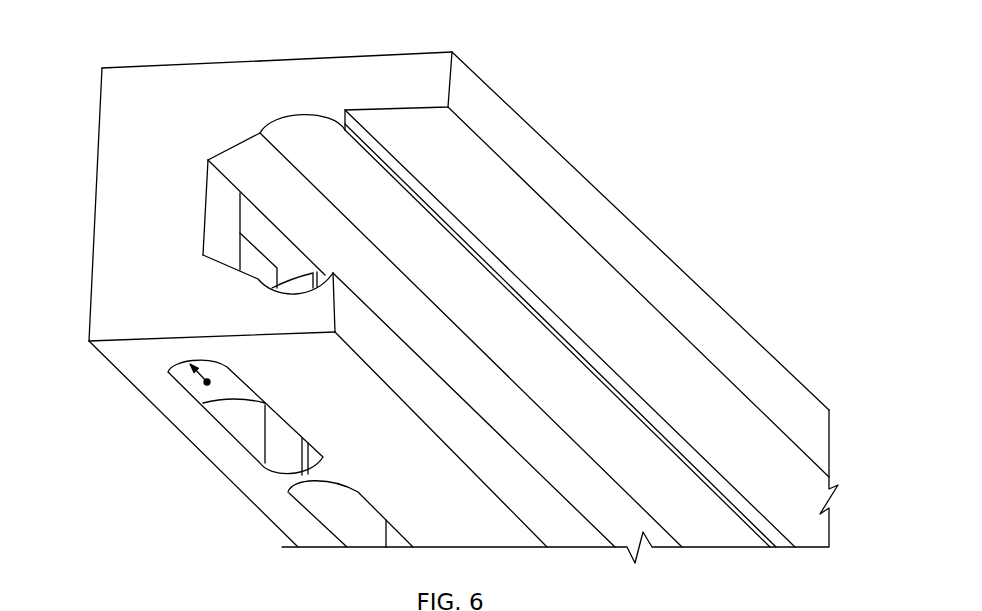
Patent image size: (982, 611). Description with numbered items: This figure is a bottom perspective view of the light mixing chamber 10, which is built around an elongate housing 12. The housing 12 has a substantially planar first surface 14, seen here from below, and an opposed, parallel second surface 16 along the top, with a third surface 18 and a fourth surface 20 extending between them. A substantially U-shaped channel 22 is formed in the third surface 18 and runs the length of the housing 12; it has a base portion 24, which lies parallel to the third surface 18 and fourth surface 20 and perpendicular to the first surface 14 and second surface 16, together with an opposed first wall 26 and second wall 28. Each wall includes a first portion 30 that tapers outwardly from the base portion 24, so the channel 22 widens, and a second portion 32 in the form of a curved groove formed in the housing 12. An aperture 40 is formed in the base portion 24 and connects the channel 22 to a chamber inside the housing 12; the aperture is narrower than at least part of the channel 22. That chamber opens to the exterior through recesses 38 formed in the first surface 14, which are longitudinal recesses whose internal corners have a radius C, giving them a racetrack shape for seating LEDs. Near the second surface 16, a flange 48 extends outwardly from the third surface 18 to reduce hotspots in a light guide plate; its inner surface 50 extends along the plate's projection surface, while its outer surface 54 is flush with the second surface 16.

The light mixing chamber 10 is at (634, 142).
The housing 12 is at (139, 117).
The first surface 14 is at (117, 353).
The second surface 16 is at (166, 64).
The third surface 18 is at (373, 359).
The fourth surface 20 is at (101, 97).
The channel 22 is at (253, 165).
The base portion 24 is at (218, 229).
The first wall 26 is at (301, 114).
The second wall 28 is at (266, 281).
The first portion 30 is at (224, 158).
The second portion 32 is at (278, 120).
The recess 38 is at (263, 402).
The aperture 40 is at (242, 238).
The flange 48 is at (425, 87).
The inner surface 50 is at (415, 108).
The outer surface 54 is at (365, 56).
The radius C is at (227, 367).